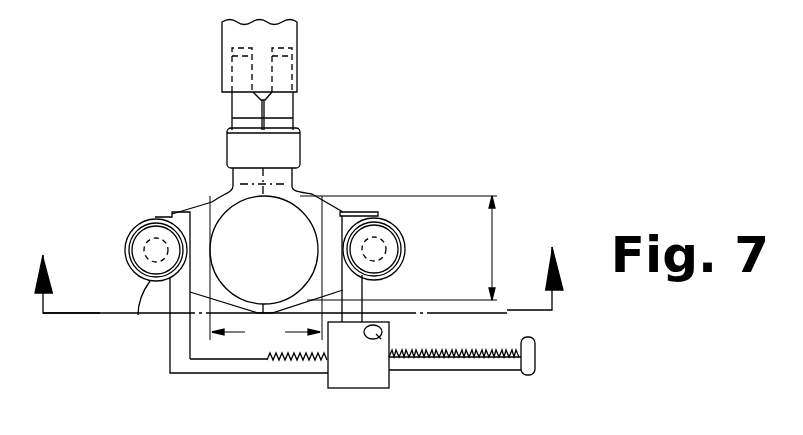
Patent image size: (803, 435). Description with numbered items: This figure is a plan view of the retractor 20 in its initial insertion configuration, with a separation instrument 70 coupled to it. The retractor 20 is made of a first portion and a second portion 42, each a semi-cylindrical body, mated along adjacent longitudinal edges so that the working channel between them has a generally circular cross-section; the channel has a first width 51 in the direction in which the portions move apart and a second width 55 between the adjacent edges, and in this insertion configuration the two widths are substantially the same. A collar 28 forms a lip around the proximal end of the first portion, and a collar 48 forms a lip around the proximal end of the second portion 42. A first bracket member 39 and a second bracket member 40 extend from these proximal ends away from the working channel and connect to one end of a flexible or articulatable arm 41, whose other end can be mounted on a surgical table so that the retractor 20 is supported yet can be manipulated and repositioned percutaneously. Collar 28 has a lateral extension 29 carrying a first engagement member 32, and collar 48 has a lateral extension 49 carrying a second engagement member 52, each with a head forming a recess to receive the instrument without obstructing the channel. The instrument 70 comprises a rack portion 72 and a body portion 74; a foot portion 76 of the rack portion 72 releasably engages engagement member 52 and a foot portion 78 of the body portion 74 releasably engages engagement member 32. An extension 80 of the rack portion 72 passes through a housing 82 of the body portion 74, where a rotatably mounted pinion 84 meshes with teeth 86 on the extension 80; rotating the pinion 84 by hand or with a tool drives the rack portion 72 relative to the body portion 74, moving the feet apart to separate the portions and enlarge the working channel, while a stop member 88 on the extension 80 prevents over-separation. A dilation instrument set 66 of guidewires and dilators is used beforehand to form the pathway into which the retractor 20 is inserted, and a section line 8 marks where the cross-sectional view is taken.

The section line 8- 8 is at (299, 266).
The retractor 20 is at (70, 200).
The collar 28 is at (316, 209).
The lateral extension 29 is at (395, 220).
The first engagement member 32 is at (388, 257).
The first bracket member 39 is at (300, 70).
The second bracket member 40 is at (221, 71).
The flexible arm 41 is at (232, 32).
The second portion 42 is at (160, 201).
The collar 48 is at (210, 202).
The lateral extension 49 is at (138, 315).
The first width 51 is at (266, 270).
The second engagement member 52 is at (140, 265).
The second width 55 is at (401, 248).
The dilation instrument set 66 is at (309, 394).
The instrument 70 is at (526, 396).
The rack portion 72 is at (212, 374).
The body portion 74 is at (340, 282).
The foot portion 76 is at (172, 214).
The foot portion 78 is at (348, 211).
The extension 80 is at (453, 370).
The housing 82 is at (370, 386).
The pinion 84 is at (383, 333).
The teeth 86 is at (467, 350).
The stop member 88 is at (534, 343).